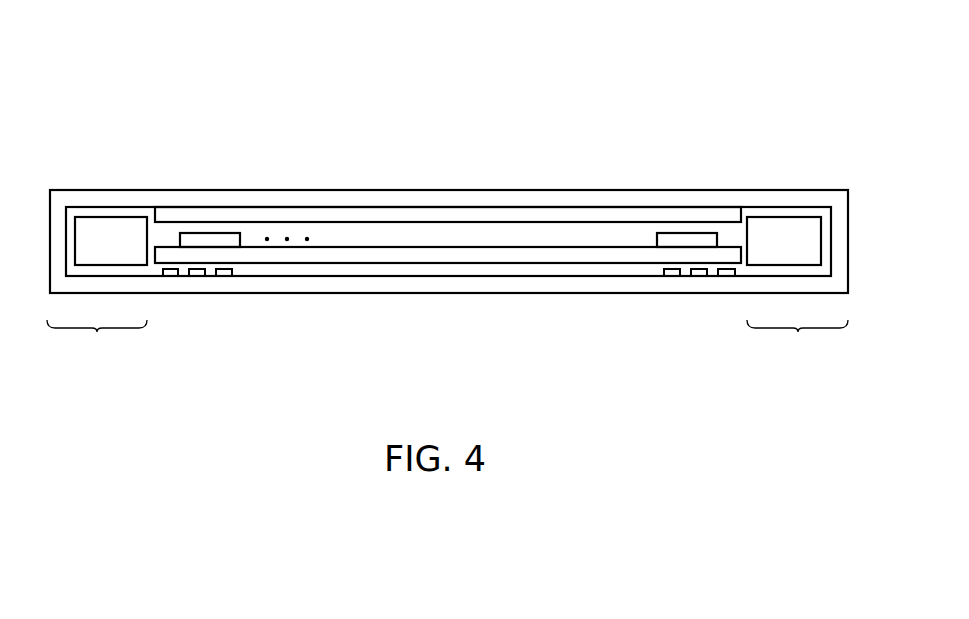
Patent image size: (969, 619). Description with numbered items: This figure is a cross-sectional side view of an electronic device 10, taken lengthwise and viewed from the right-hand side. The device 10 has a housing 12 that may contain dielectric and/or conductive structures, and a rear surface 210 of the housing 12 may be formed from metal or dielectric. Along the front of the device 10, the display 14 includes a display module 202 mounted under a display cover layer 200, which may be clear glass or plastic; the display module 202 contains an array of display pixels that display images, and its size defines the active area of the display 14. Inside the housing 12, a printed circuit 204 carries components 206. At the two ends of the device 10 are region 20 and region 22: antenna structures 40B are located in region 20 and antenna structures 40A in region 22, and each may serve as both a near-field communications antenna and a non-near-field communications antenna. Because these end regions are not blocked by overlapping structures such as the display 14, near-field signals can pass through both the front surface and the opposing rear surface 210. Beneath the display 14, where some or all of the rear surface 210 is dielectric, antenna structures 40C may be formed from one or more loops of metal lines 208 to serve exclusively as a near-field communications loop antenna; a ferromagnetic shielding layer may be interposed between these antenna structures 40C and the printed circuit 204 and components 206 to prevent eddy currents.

The electronic device 10 is at (447, 197).
The housing 12 is at (498, 283).
The display 14 is at (448, 192).
The region 20 is at (97, 341).
The region 22 is at (797, 341).
The antenna structures 40A is at (790, 217).
The antenna structures 40B is at (105, 217).
The antenna structures 40C is at (449, 316).
The display cover layer 200 is at (306, 195).
The display module 202 is at (366, 213).
The printed circuit 204 is at (418, 253).
The components 206 is at (207, 240).
The metal lines 208 is at (215, 277).
The rear surface 210 is at (375, 293).